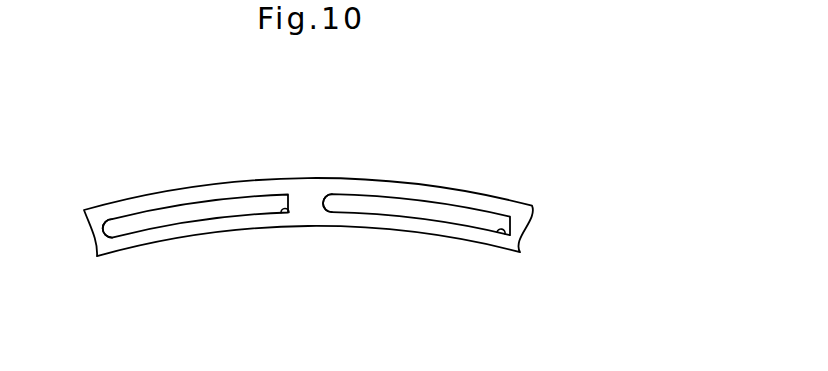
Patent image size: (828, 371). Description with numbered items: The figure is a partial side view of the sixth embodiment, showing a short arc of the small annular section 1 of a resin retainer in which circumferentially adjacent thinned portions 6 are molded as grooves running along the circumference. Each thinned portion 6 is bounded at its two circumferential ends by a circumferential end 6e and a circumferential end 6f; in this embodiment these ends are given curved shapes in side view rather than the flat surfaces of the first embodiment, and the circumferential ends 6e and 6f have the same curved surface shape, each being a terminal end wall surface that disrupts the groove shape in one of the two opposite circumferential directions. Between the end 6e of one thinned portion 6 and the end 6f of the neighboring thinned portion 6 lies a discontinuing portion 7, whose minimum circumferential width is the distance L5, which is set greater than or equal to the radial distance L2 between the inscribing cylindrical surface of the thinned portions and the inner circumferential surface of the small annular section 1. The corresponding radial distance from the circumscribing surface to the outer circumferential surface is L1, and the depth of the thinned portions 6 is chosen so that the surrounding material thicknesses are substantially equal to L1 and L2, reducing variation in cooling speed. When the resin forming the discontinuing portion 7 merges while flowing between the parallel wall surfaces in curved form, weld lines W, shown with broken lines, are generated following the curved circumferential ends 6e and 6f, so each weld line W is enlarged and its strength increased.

The small annular section 1 is at (508, 181).
The thinned portion 6 is at (192, 202).
The circumferential end 6e is at (282, 200).
The circumferential end 6f is at (116, 236).
The discontinuing portion 7 is at (300, 203).
The weld line W is at (90, 220).
The shortest radial distance between thinned portion PCD surface and outer circumfer L1 is at (66, 212).
The shortest radial distance between inscribing cylindrical surface and inner circum L2 is at (512, 233).
The minimum circumferential distance between adjacent circumferential ends L5 is at (324, 139).